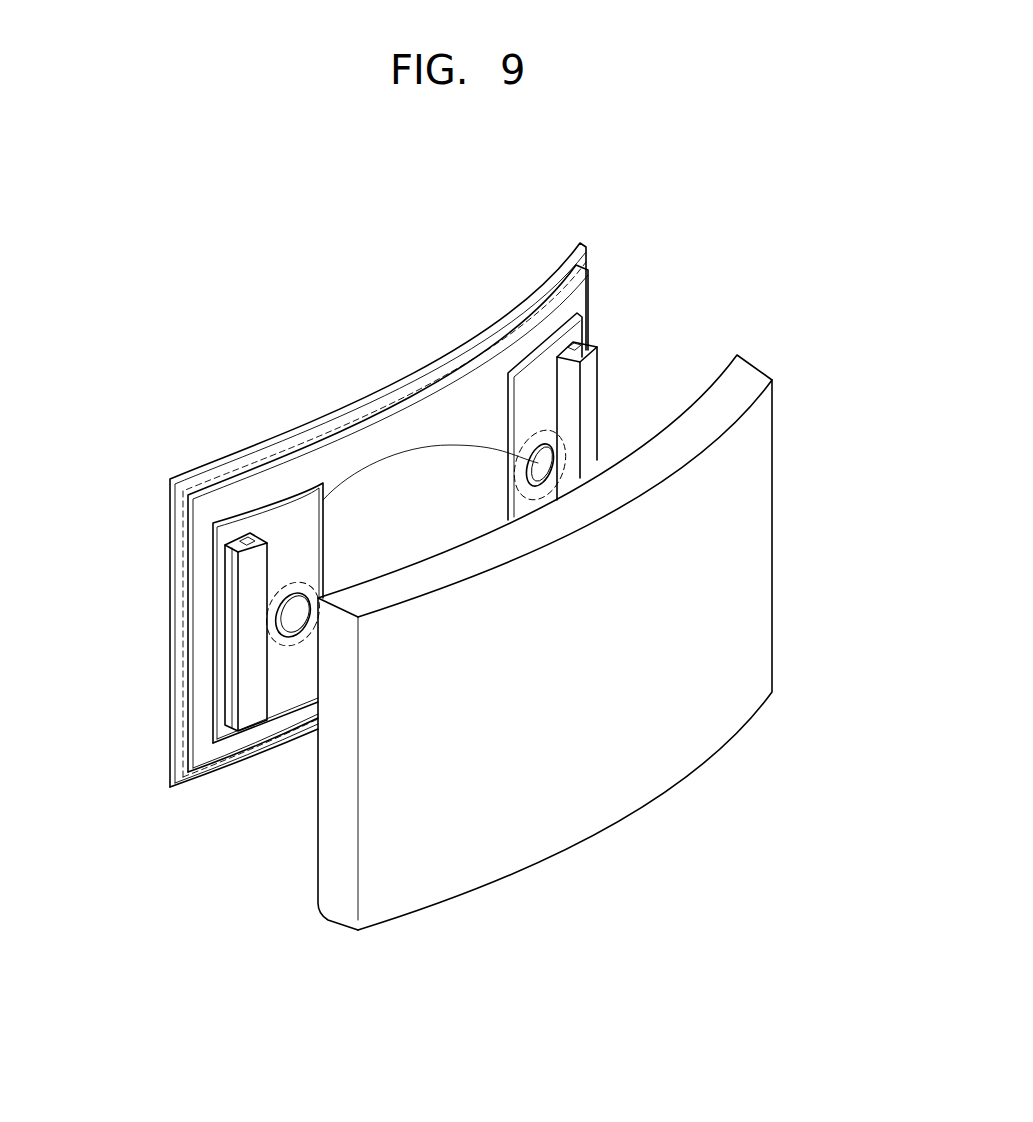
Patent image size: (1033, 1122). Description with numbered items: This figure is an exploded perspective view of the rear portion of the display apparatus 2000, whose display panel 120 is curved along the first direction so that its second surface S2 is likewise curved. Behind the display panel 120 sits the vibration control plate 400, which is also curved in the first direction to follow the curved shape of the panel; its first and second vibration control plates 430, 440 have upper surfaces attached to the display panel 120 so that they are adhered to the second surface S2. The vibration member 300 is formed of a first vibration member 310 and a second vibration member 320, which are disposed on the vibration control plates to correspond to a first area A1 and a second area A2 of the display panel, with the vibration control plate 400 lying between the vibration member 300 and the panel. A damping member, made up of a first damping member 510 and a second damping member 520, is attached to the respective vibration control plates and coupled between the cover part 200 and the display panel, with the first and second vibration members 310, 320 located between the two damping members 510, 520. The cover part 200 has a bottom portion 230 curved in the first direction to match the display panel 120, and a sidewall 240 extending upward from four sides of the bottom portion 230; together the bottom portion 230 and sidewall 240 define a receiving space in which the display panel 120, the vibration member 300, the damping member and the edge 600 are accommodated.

The display apparatus 2000 is at (684, 258).
The display panel 120 is at (213, 465).
The edge 600 is at (172, 496).
The second surface S2 is at (277, 487).
The vibration control plate 400 is at (321, 368).
The first vibration control plate 430 is at (322, 486).
The second vibration control plate 440 is at (525, 362).
The second damping member 520 is at (594, 370).
The second area A2 is at (552, 440).
The vibration member 300 is at (103, 537).
The first vibration member 310 is at (293, 607).
The second vibration member 320 is at (232, 548).
The first damping member 510 is at (227, 668).
The first area A1 is at (283, 645).
The cover part 200 is at (248, 832).
The bottom portion 230 is at (373, 830).
The sidewall 240 is at (327, 892).